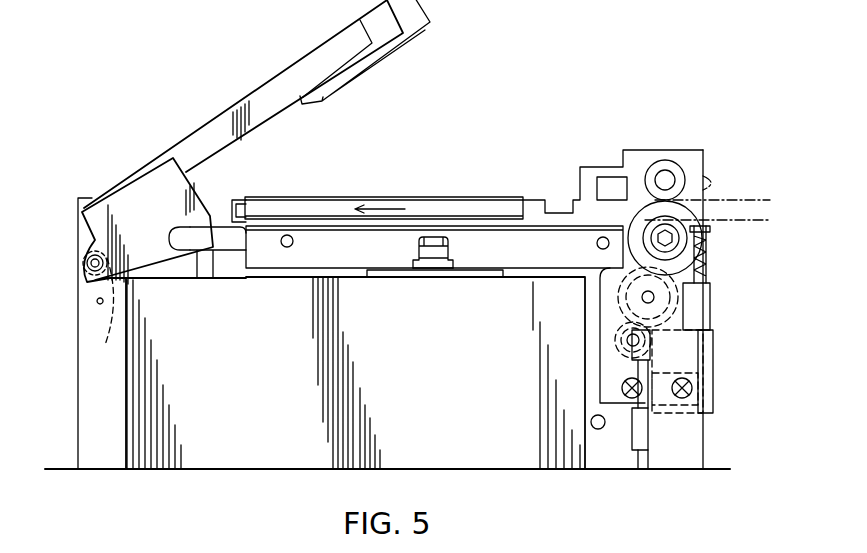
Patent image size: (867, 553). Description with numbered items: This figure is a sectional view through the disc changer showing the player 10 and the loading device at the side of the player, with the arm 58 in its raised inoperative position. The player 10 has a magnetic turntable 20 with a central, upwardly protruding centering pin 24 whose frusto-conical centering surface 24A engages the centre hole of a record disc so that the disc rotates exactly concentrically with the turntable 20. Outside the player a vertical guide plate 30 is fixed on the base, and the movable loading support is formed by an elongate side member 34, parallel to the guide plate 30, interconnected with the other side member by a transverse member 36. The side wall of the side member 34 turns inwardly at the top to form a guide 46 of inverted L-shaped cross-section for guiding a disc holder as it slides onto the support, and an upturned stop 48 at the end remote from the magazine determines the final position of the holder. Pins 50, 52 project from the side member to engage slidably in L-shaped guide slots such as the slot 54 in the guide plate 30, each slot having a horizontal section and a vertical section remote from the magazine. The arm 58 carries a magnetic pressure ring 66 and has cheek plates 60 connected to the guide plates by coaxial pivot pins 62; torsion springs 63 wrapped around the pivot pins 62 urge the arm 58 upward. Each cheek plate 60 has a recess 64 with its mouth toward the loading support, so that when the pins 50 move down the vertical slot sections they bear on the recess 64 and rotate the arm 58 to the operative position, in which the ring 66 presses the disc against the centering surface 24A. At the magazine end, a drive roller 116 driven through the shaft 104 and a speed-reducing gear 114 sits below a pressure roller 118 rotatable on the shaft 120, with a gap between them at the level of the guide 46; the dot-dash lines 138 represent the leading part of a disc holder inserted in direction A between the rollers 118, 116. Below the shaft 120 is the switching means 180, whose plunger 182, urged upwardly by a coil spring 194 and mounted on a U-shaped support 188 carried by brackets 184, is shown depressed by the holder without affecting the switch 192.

The player 10 is at (507, 291).
The turntable 20 is at (484, 270).
The centering pin 24 is at (438, 237).
The frusto-conical centering surface 24A is at (413, 262).
The guide plate 30 is at (602, 457).
The side member 34 is at (478, 198).
The transverse member 36 is at (617, 257).
The guide 46 is at (316, 197).
The stop 48 is at (233, 205).
The pin 50 is at (294, 242).
The pin 52 is at (597, 243).
The L-shaped guide slot 54 is at (226, 233).
The arm 58 is at (252, 107).
The cheek plate 60 is at (183, 188).
The pivot pin 62 is at (96, 272).
The torsion spring 63 is at (114, 330).
The recess 64 is at (185, 228).
The magnetic pressure ring 66 is at (387, 57).
The shaft 104 is at (606, 424).
The speed-reducing gear 114 is at (698, 322).
The drive roller 116 is at (700, 264).
The pressure roller 118 is at (677, 165).
The shaft 120 is at (647, 160).
The cover 138 is at (722, 218).
The switching means 180 is at (735, 364).
The plunger 182 is at (710, 230).
The bracket 184 is at (688, 422).
The U-shaped support 188 is at (712, 295).
The switch 192 is at (641, 413).
The coil spring 194 is at (708, 250).
The direction arrow A is at (379, 206).